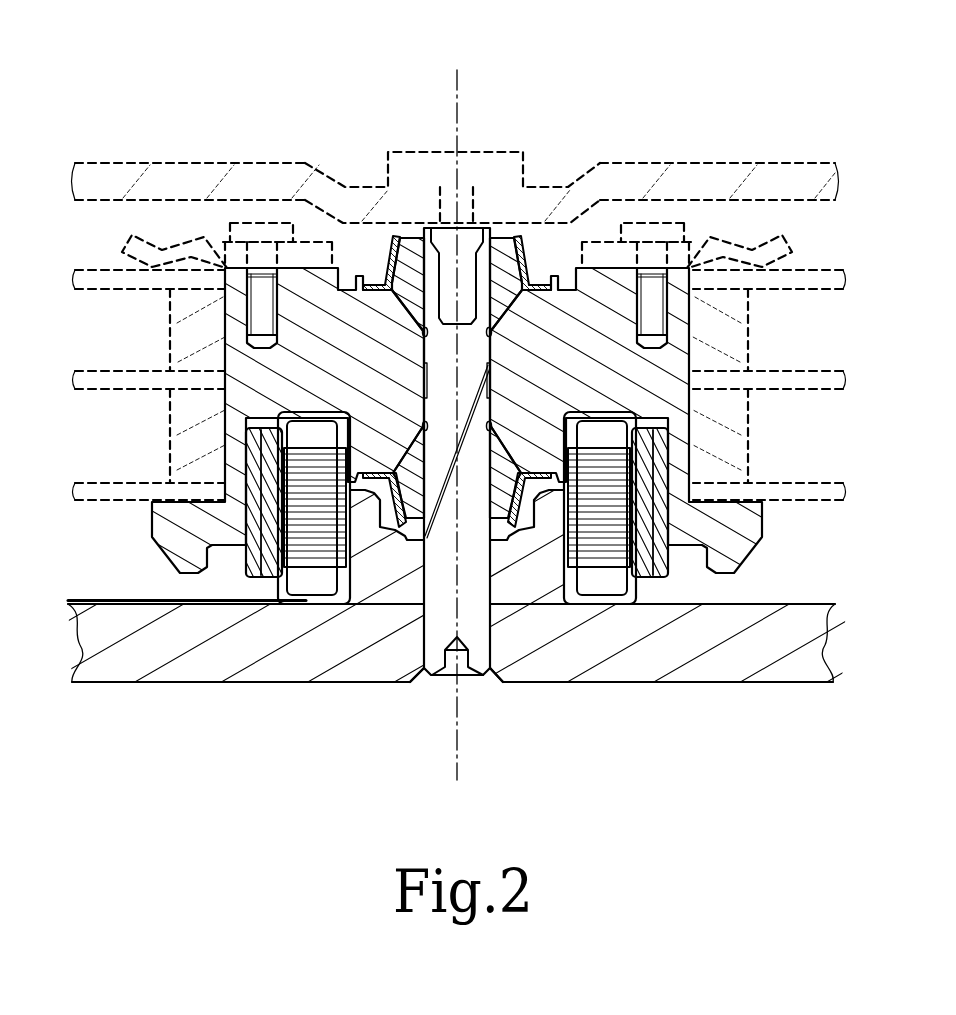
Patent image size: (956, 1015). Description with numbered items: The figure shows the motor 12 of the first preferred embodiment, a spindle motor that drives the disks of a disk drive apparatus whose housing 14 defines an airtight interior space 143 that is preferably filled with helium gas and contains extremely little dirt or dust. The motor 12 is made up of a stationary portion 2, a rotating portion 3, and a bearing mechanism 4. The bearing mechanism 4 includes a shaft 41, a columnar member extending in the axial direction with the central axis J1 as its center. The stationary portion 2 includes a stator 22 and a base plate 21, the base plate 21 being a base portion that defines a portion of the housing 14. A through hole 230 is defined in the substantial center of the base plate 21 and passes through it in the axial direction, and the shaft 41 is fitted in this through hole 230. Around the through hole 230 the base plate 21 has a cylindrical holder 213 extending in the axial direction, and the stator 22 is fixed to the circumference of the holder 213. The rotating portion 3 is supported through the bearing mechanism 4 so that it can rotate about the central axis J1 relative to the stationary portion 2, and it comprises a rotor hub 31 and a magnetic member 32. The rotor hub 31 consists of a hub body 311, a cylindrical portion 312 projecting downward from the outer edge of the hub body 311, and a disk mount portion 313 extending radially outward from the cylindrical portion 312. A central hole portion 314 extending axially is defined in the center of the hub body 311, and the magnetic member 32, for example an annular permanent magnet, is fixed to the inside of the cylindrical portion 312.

The stationary portion 2 is at (478, 646).
The rotating portion 3 is at (614, 222).
The bearing mechanism 4 is at (506, 530).
The motor 12 is at (742, 97).
The housing 14 is at (817, 145).
The base plate 21 is at (730, 667).
The stator 22 is at (305, 600).
The rotor hub 31 is at (440, 384).
The magnetic member 32 is at (656, 596).
The shaft 41 is at (480, 655).
The interior space 143 is at (548, 250).
The holder 213 is at (385, 570).
The through hole 230 is at (443, 644).
The hub body 311 is at (323, 313).
The cylindrical portion 312 is at (233, 470).
The disk mount portion 313 is at (188, 512).
The central hole portion 314 is at (475, 414).
The central axis J1 is at (455, 88).